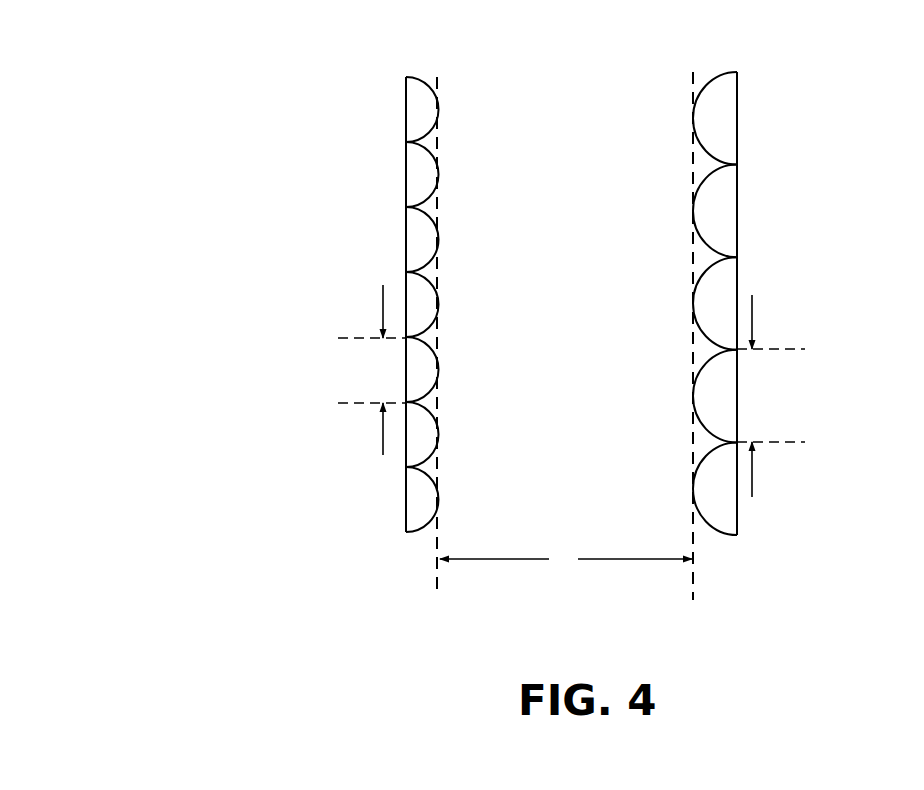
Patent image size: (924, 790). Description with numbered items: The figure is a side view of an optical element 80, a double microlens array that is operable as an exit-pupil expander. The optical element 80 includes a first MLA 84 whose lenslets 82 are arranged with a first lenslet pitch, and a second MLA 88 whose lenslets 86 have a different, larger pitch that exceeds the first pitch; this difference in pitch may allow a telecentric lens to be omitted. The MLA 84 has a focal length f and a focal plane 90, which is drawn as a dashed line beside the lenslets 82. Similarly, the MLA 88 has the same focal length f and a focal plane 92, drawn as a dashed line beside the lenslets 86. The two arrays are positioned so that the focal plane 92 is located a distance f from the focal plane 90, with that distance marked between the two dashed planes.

The optical element 80 is at (615, 343).
The lenslets 82 is at (432, 350).
The MLA 84 is at (432, 276).
The lenslets 86 is at (737, 256).
The second MLA 88 is at (707, 297).
The focal plane 90 is at (438, 78).
The focal plane 92 is at (693, 600).